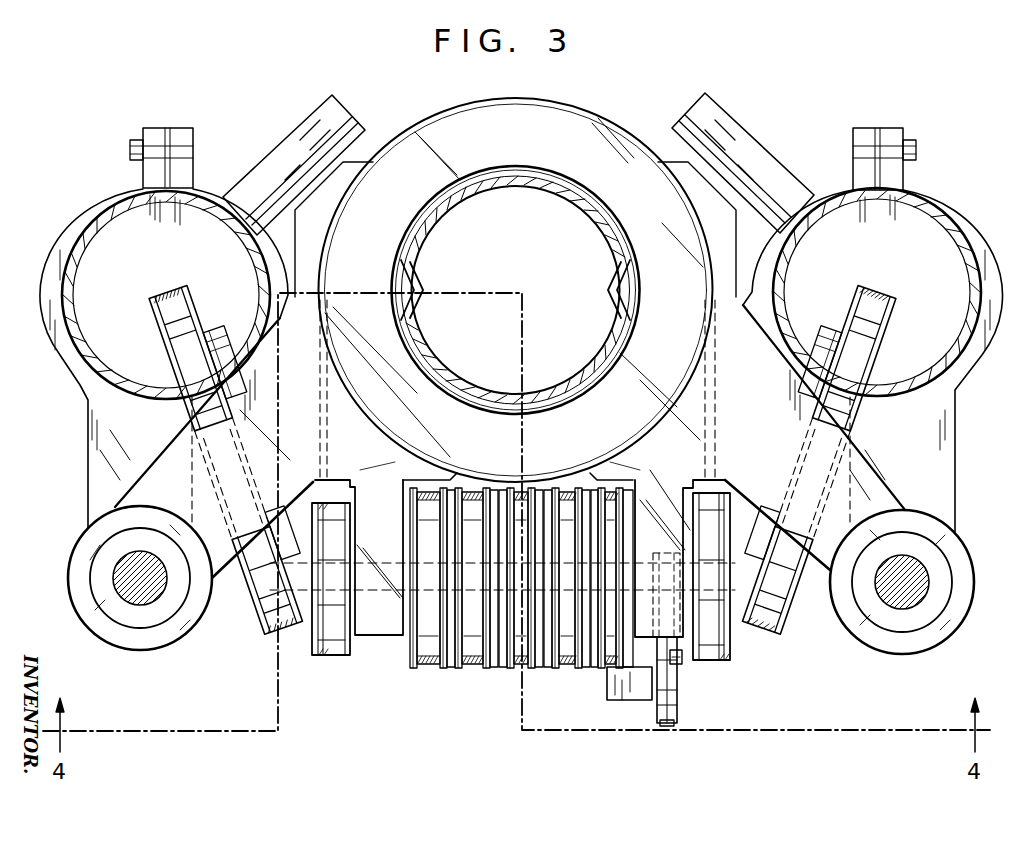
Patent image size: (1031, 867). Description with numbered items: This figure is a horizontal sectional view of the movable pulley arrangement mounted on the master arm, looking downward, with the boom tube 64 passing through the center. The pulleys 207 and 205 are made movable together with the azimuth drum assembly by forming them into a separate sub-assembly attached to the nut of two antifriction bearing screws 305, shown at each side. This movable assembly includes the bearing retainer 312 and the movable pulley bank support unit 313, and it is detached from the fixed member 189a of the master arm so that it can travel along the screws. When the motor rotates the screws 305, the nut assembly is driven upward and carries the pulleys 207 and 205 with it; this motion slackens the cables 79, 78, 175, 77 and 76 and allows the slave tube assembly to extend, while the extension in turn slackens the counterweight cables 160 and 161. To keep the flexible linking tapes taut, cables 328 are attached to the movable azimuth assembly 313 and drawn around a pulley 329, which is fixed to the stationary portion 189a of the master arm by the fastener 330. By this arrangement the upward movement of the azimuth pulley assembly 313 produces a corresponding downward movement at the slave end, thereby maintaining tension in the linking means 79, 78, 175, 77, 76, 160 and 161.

The bearing retainer 312 is at (570, 108).
The boom tube 64 is at (418, 297).
The fixed member of the master arm 189a is at (102, 208).
The counterweight cable 161 is at (176, 290).
The counterweight cable 160 is at (878, 290).
The movable pulley bank support unit 313 is at (166, 485).
The antifriction bearing screw 305 is at (117, 563).
The pulley 205 is at (335, 643).
The cable 79 is at (430, 668).
The cable 78 is at (482, 668).
The cable 175 is at (523, 668).
The cable 77 is at (562, 667).
The cable 76 is at (614, 667).
The pulley 207 is at (452, 668).
The pulley 329 is at (677, 706).
The fastener 330 is at (676, 666).
The cable 328 is at (667, 725).